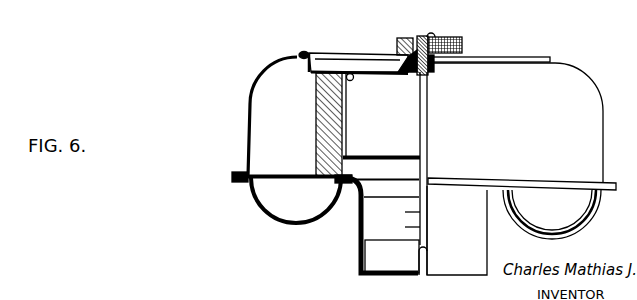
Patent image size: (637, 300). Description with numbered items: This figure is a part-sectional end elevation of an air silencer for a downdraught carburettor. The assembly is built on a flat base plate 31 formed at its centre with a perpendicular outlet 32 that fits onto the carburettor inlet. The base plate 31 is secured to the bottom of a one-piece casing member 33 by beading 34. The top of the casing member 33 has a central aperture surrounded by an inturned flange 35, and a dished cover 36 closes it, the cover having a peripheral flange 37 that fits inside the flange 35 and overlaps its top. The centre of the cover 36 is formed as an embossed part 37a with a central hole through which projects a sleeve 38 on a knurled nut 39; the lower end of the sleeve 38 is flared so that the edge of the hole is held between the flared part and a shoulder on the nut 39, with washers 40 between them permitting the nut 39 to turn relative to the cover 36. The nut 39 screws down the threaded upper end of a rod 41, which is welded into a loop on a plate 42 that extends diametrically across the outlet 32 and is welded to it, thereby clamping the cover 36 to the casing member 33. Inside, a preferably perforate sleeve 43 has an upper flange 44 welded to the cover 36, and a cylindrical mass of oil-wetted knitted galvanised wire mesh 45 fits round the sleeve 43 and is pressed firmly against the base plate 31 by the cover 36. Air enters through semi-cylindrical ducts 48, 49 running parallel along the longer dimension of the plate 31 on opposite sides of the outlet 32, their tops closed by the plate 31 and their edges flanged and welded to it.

The base plate 31 is at (268, 173).
The outlet 32 is at (357, 205).
The casing member 33 is at (247, 84).
The beading 34 is at (232, 173).
The inturned flange 35 is at (309, 62).
The dished cover 36 is at (338, 72).
The peripheral flange 37 is at (304, 52).
The embossed part 37a is at (400, 70).
The sleeve 38 is at (423, 70).
The knurled nut 39 is at (452, 37).
The washers 40 is at (415, 38).
The rod 41 is at (419, 121).
The plate 42 is at (401, 230).
The sleeve 43 is at (347, 96).
The flange 44 is at (353, 71).
The wire mesh 45 is at (318, 112).
The semi-cylindrical duct 48 is at (253, 194).
The semi-cylindrical duct 49 is at (535, 209).